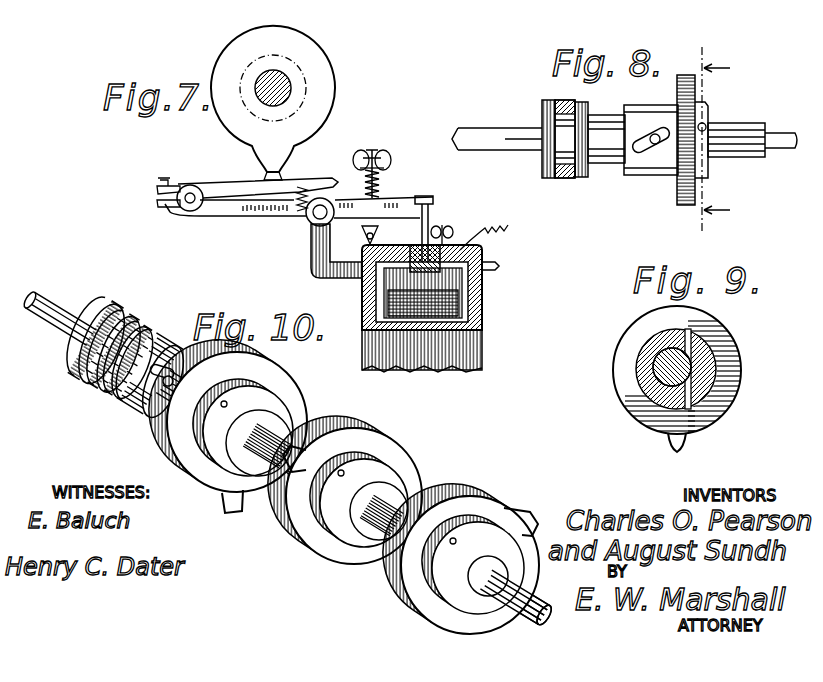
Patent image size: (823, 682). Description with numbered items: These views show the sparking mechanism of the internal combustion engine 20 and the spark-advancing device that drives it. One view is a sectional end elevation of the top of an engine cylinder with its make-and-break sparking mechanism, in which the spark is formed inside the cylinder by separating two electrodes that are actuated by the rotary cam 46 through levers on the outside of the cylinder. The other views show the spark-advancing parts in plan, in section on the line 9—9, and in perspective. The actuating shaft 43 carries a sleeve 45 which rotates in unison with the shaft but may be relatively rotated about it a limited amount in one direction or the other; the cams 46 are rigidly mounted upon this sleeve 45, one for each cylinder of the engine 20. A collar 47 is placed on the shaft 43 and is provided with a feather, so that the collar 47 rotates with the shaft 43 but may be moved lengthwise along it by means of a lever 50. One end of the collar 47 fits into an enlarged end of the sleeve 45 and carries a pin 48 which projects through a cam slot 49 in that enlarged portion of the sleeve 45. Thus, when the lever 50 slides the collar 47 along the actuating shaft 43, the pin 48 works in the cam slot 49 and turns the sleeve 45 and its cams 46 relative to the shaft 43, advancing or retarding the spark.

In FIG. 8, the section line 9- 9 is at (716, 140).
In FIG. 7, the internal combustion engine 20 is at (485, 300).
In FIG. 7, the actuating shaft 43 is at (292, 88).
In FIG. 8, the actuating shaft 43 is at (777, 133).
In FIG. 9, the actuating shaft 43 is at (658, 363).
In FIG. 10, the actuating shaft 43 is at (56, 312).
In FIG. 8, the sleeve 45 is at (748, 158).
In FIG. 9, the sleeve 45 is at (642, 402).
In FIG. 10, the sleeve 45 is at (278, 440).
In FIG. 7, the cams 46 is at (322, 62).
In FIG. 8, the cams 46 is at (706, 108).
In FIG. 9, the cams 46 is at (734, 416).
In FIG. 10, the cams 46 is at (215, 492).
In FIG. 8, the collar 47 is at (606, 165).
In FIG. 10, the collar 47 is at (138, 404).
In FIG. 8, the pin 48 is at (650, 128).
In FIG. 10, the pin 48 is at (168, 382).
In FIG. 8, the cam slot 49 is at (660, 148).
In FIG. 10, the cam slot 49 is at (158, 392).
In FIG. 8, the lever 50 is at (566, 180).